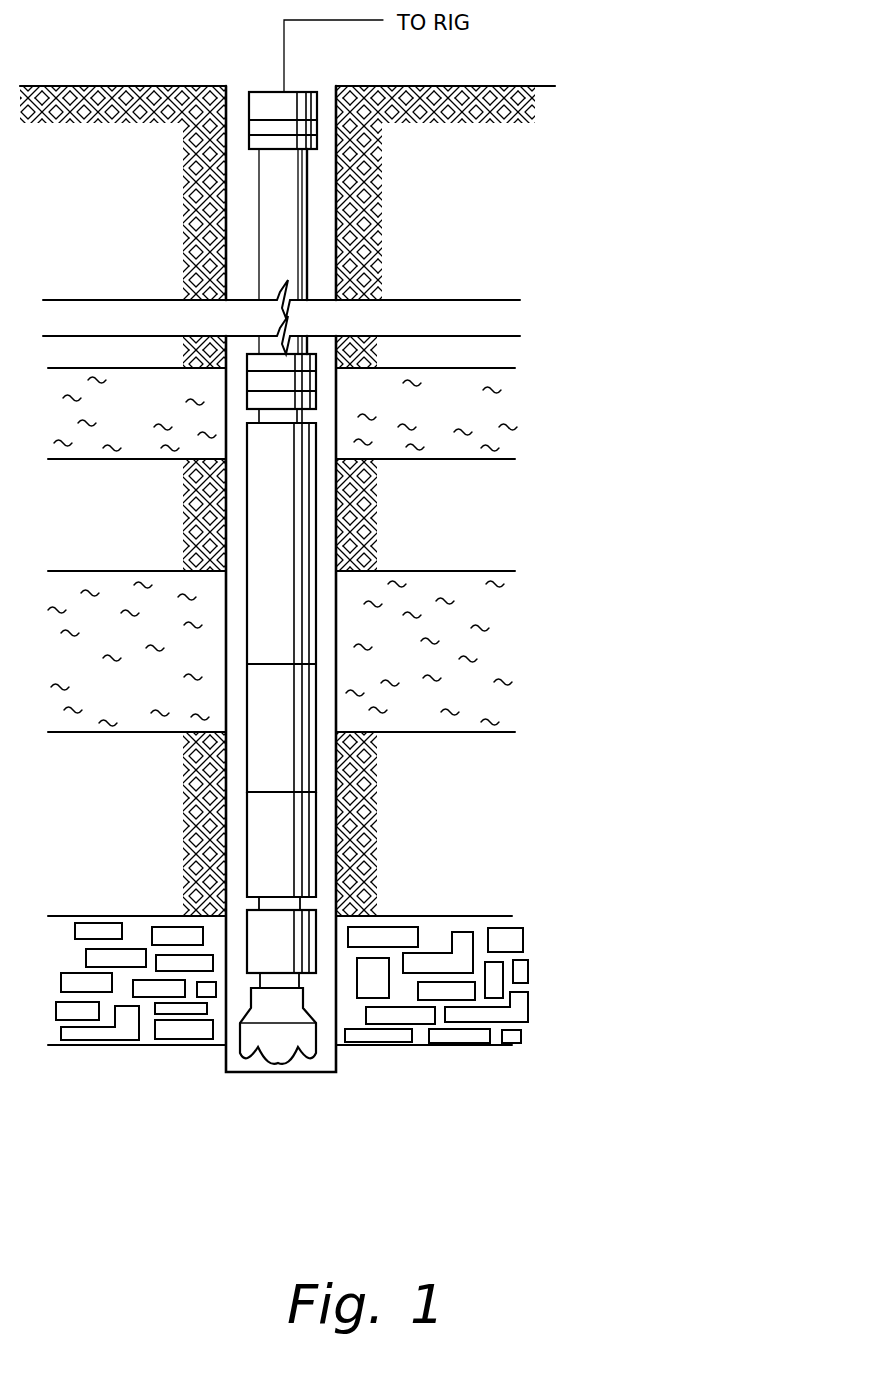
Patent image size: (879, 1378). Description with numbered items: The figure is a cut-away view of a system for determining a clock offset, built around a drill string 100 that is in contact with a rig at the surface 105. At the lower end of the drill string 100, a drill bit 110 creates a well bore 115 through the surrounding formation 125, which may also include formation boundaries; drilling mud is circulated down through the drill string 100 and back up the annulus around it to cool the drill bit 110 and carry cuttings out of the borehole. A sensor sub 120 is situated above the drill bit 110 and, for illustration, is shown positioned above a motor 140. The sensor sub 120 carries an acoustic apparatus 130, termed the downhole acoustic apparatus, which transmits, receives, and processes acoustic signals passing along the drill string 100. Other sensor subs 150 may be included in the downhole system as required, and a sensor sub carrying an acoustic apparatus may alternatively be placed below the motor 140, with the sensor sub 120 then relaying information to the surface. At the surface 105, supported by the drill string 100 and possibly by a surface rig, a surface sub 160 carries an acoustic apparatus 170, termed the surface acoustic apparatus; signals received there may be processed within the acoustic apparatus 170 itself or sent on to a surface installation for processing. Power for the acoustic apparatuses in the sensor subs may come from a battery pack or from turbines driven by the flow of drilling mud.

The drill string 100 is at (270, 262).
The surface 105 is at (123, 85).
The drill bit 110 is at (280, 1047).
The well bore 115 is at (240, 225).
The sensor sub 120 is at (270, 364).
The formation 125 is at (478, 216).
The acoustic apparatus 130 is at (289, 380).
The motor 140 is at (270, 849).
The other sensor subs 150 is at (270, 522).
The surface sub 160 is at (265, 103).
The acoustic apparatus 170 is at (257, 128).